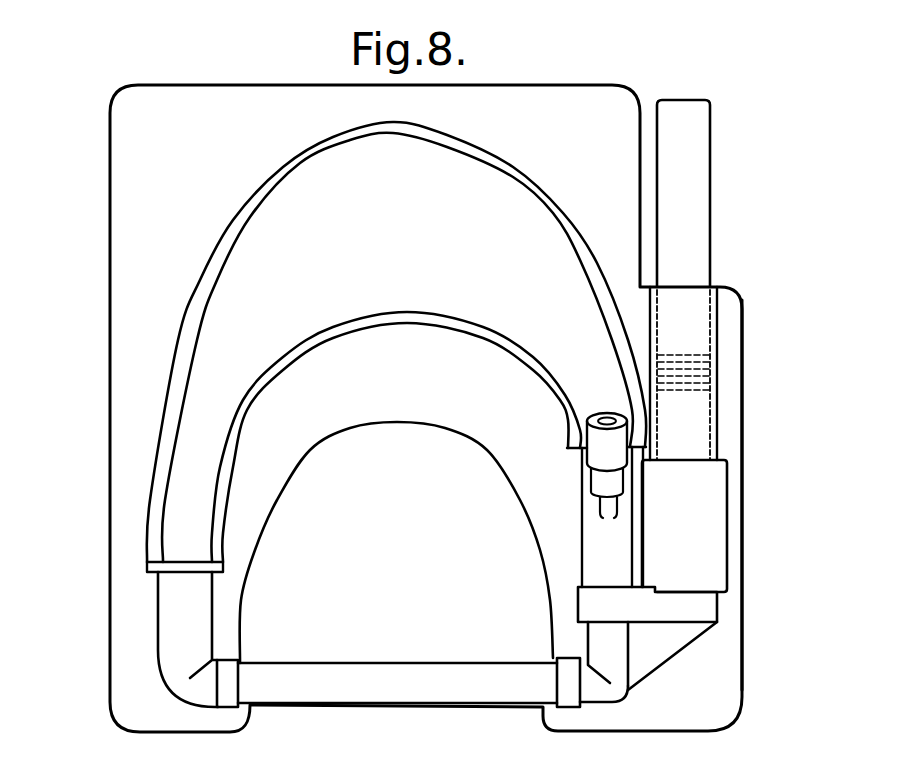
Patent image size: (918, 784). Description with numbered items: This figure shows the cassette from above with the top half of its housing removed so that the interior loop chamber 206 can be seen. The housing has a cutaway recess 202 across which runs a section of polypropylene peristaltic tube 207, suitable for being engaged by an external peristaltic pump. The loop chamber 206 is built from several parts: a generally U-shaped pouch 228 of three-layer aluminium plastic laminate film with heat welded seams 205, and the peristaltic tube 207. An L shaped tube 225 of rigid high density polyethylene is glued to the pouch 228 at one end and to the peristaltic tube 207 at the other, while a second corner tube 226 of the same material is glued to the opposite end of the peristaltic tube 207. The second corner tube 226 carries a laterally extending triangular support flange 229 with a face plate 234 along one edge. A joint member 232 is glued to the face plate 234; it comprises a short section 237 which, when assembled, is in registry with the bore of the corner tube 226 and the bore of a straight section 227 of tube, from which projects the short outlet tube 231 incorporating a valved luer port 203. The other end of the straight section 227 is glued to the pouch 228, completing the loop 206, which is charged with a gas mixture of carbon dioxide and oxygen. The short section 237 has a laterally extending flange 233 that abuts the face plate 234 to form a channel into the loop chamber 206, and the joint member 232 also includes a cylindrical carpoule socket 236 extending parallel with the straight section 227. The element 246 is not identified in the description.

The recess 202 is at (417, 591).
The valved luer port 203 is at (618, 445).
The heat welded seams 205 is at (277, 377).
The loop chamber 206 is at (130, 485).
The peristaltic tube 207 is at (363, 705).
The L shaped tube 225 is at (158, 637).
The second corner tube 226 is at (620, 697).
The straight section 227 is at (603, 535).
The pouch 228 is at (212, 418).
The triangular support flange 229 is at (658, 647).
The outlet tube 231 is at (600, 483).
The joint member 232 is at (748, 548).
The flange 233 is at (720, 597).
The face plate 234 is at (718, 614).
The carpoule socket 236 is at (730, 475).
The short section 237 is at (587, 603).
The column 246 is at (712, 248).